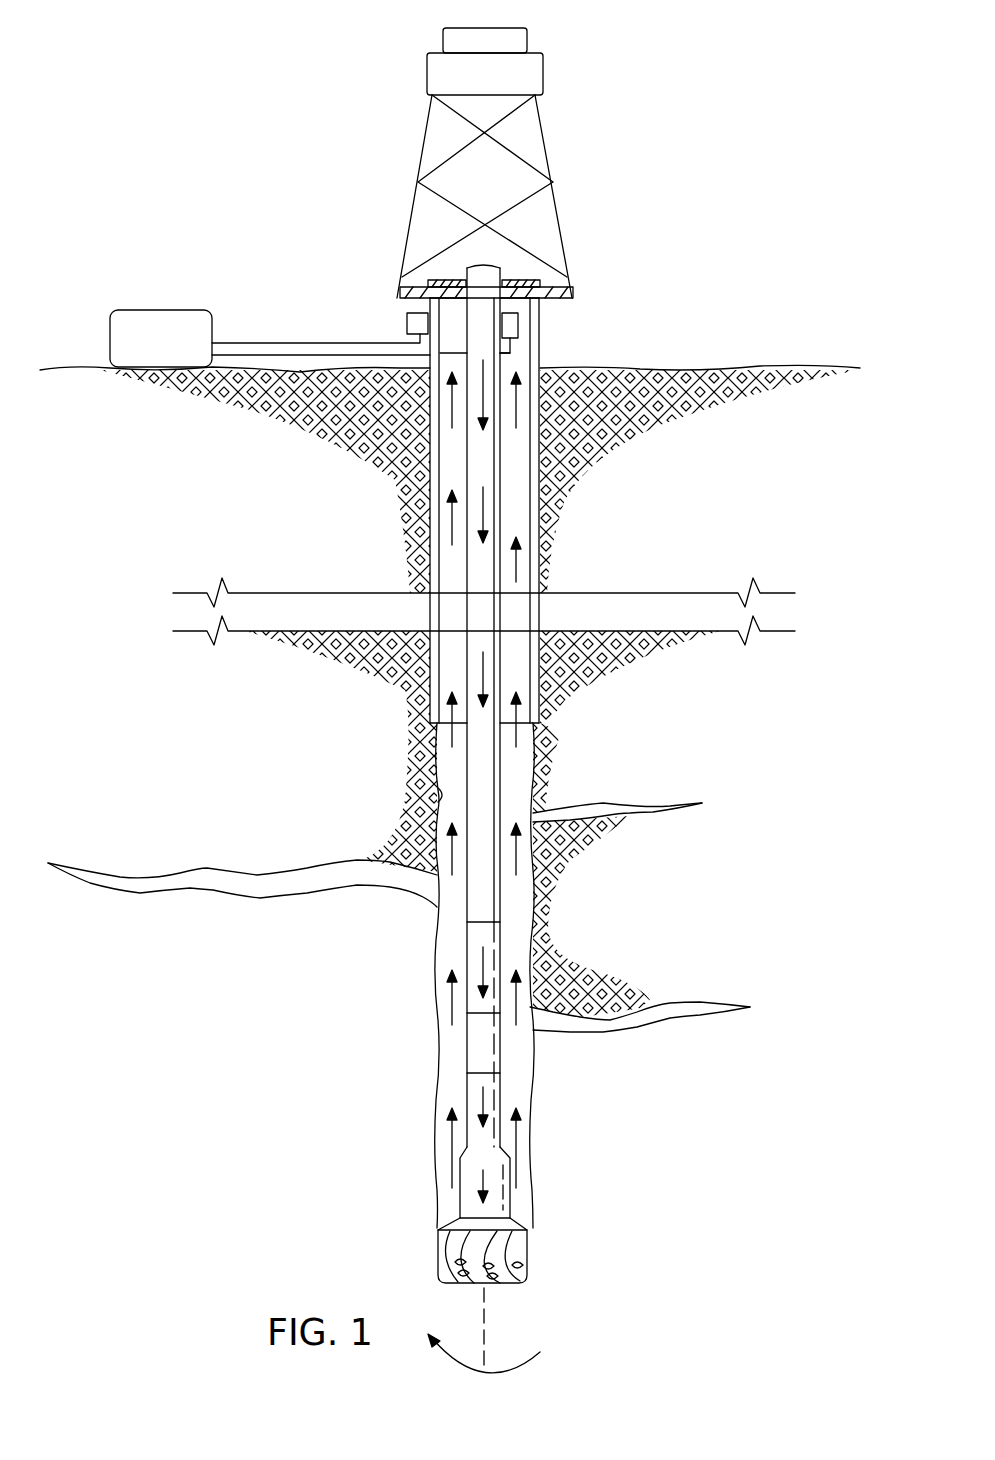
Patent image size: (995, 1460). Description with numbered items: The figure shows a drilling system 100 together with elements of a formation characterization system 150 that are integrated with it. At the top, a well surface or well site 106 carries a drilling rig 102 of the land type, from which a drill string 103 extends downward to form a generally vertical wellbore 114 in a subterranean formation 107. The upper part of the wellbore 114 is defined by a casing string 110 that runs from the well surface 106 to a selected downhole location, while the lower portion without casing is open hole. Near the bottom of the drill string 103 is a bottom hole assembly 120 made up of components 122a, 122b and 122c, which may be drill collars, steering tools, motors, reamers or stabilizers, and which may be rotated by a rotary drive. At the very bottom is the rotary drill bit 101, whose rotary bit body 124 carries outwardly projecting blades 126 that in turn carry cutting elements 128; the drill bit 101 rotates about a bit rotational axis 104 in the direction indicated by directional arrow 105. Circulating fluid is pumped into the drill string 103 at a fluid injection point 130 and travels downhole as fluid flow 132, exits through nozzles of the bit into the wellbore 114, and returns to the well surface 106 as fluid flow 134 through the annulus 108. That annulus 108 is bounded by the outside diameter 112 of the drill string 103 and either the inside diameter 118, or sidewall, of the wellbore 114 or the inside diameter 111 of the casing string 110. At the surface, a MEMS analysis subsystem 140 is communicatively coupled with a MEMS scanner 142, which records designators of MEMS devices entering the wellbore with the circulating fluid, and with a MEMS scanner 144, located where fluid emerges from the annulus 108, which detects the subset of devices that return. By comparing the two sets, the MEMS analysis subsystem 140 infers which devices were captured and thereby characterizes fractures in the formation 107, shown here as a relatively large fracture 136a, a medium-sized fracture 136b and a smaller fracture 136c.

The drilling system 100 is at (708, 58).
The rotary drill bit 101 is at (328, 1217).
The drilling rig 102 is at (340, 96).
The drill string 103 is at (515, 450).
The bit rotational axis 104 is at (492, 1302).
The directional arrow 105 is at (540, 1352).
The well surface or well site 106 is at (570, 345).
The subterranean formation 107 is at (682, 368).
The annulus 108 is at (452, 443).
The casing string 110 is at (436, 490).
The inside diameter of casing string 111 is at (525, 514).
The outside diameter of drill string 112 is at (437, 760).
The wellbore 114 is at (262, 710).
The inside diameter of wellbore 118 is at (433, 796).
The bottom hole assembly 120 is at (558, 1084).
The component of bottom hole assembly 122a is at (463, 952).
The component of bottom hole assembly 122b is at (463, 1040).
The component of bottom hole assembly 122c is at (463, 1088).
The rotary bit body 124 is at (455, 1196).
The blades 126 is at (437, 1242).
The cutting elements 128 is at (520, 1255).
The fluid injection point 130 is at (478, 255).
The fluid flow 132 is at (487, 672).
The fluid flow 134 is at (450, 535).
The fracture 136a is at (220, 893).
The fracture 136b is at (687, 1018).
The fracture 136c is at (658, 815).
The MEMS analysis subsystem 140 is at (160, 310).
The MEMS scanner 142 is at (520, 333).
The MEMS scanner 144 is at (407, 324).
The formation characterization system 150 is at (232, 185).